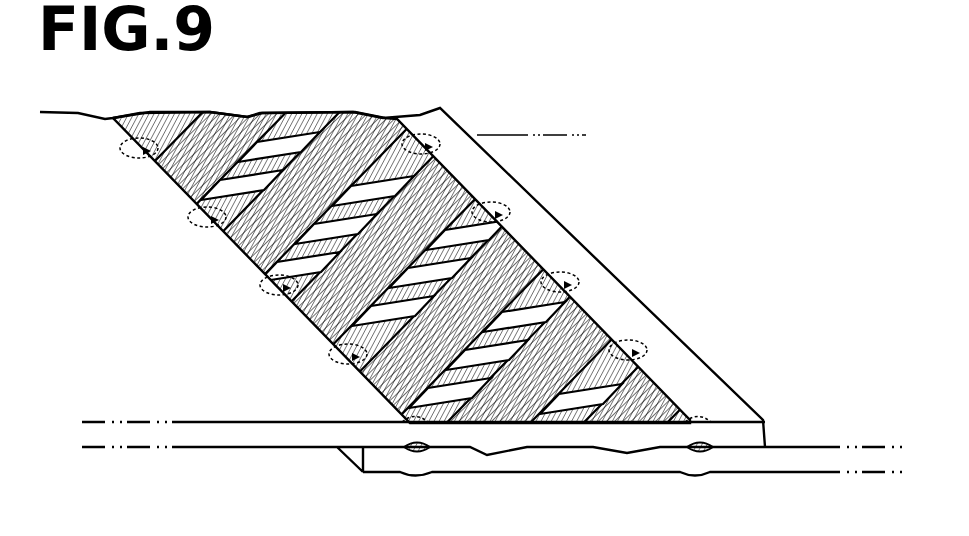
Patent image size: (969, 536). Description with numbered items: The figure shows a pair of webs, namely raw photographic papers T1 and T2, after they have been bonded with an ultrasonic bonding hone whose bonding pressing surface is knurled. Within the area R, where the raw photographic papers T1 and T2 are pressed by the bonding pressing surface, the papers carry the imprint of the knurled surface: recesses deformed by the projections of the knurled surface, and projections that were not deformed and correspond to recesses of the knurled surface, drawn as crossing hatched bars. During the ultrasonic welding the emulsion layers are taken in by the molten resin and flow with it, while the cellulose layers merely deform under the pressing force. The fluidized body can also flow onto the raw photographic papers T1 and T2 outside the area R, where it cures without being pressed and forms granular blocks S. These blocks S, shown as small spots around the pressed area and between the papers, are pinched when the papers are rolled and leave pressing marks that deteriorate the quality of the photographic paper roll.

The area R is at (380, 95).
The granular blocks S is at (333, 350).
The raw photographic paper T1 is at (267, 438).
The raw photographic paper T2 is at (790, 465).